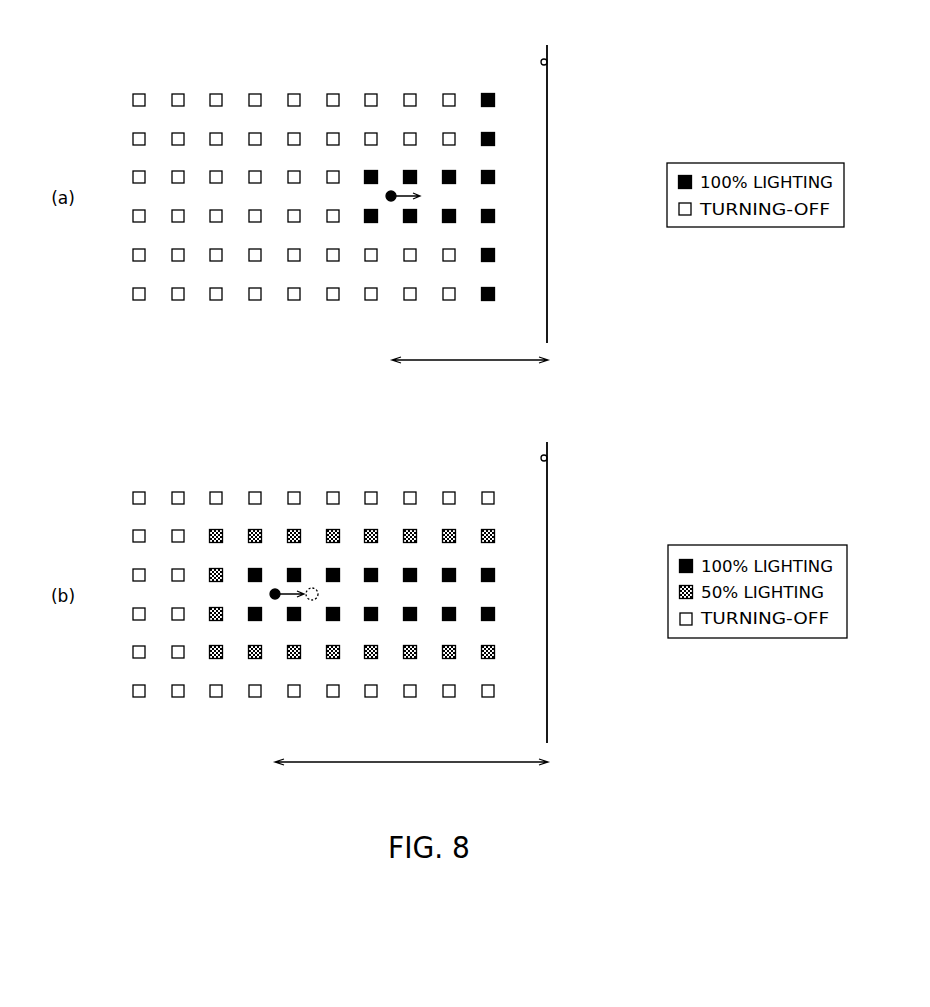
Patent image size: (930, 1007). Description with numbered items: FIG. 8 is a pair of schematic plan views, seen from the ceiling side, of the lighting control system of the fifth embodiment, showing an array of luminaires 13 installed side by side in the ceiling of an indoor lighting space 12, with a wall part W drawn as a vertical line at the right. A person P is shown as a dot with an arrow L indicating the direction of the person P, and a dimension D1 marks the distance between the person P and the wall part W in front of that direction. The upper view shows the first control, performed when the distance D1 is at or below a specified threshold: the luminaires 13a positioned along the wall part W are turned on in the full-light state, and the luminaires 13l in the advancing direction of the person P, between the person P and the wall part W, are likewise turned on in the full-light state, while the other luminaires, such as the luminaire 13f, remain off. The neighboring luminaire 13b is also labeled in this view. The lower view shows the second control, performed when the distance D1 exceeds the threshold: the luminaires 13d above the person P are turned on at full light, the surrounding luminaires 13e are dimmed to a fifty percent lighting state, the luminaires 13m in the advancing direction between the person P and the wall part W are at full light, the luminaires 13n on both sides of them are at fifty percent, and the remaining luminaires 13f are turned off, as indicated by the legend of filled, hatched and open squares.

The lighting space 12 is at (518, 75).
The luminaire 13 is at (178, 93).
The luminaires positioned along the wall part 13a is at (495, 101).
The light emitting element adjacent to reference position 13b is at (405, 171).
The luminaires in the advancing direction of the movement of the person 13l is at (456, 171).
The remaining luminaires 13f is at (293, 93).
The luminaires positioned above the person 13d is at (288, 568).
The luminaires positioned around the luminaires above the person 13e is at (300, 532).
The luminaires positioned at both sides of the luminaires in the advancing direction 13n is at (495, 535).
The luminaires in the advancing direction between the person and the wall part 13m is at (495, 576).
The wall part W is at (547, 58).
The person P is at (391, 201).
The direction of the person L is at (421, 200).
The distance between the wall part and the person D1 is at (411, 574).